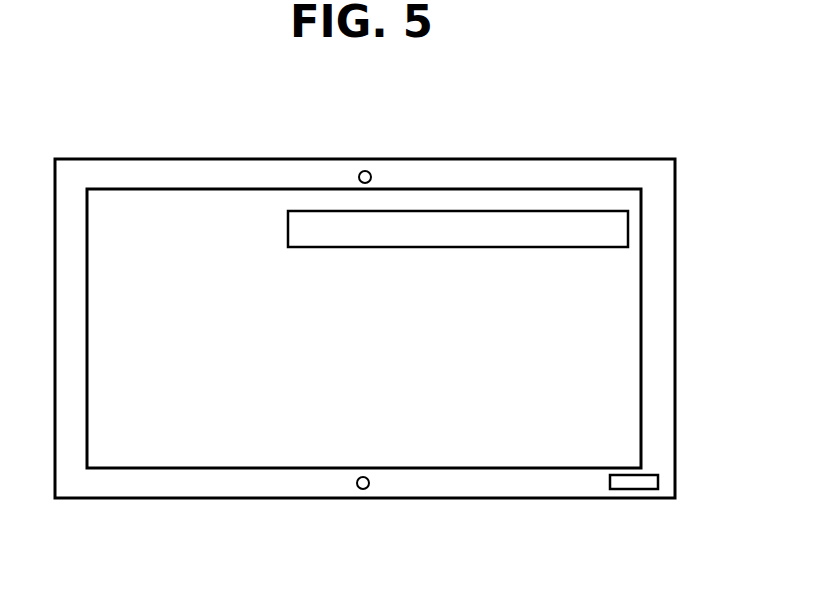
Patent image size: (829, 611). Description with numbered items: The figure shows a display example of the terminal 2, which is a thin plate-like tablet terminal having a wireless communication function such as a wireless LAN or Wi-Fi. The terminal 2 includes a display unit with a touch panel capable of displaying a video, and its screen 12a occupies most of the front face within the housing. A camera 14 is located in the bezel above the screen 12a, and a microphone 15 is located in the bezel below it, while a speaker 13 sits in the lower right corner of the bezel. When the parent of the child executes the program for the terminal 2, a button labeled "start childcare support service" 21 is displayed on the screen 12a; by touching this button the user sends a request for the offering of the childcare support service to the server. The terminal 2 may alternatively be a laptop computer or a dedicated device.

The terminal 2 is at (675, 326).
The screen 12a is at (618, 296).
The start childcare support service button 21 is at (522, 210).
The camera 14 is at (366, 171).
The microphone 15 is at (368, 488).
The speaker 13 is at (658, 482).